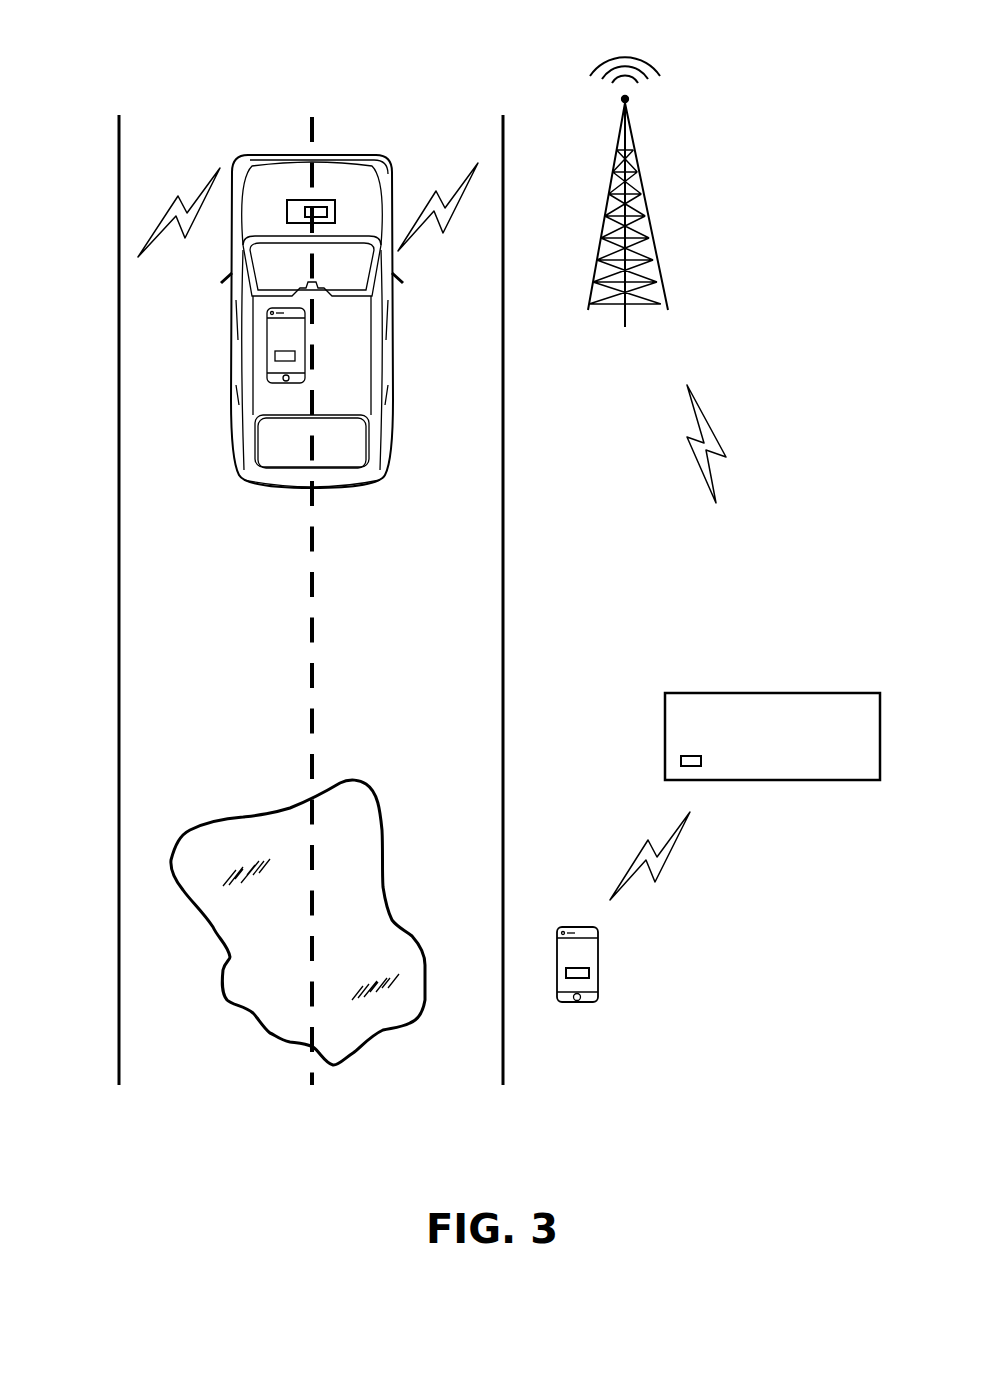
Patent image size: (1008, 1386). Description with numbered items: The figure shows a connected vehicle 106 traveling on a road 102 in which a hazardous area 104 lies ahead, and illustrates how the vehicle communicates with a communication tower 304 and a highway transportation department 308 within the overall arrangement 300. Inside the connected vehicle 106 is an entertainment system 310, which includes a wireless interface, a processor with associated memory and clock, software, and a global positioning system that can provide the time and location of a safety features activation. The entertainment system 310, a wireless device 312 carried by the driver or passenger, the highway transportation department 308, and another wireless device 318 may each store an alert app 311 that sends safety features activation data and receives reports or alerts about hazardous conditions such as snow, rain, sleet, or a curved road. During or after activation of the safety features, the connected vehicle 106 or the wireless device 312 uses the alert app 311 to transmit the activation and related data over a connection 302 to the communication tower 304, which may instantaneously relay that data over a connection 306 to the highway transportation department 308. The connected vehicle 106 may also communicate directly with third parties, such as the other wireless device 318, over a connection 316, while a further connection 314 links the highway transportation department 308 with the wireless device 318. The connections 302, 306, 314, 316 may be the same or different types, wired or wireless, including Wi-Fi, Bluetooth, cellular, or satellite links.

The road 102 is at (448, 1027).
The pothole / road hazard 104 is at (290, 909).
The connected vehicle 106 is at (237, 433).
The system 300 is at (715, 1023).
The connection 302 is at (452, 195).
The communication tower 304 is at (642, 187).
The connection 306 is at (715, 432).
The highway transportation department 308 is at (775, 781).
The entertainment system 310 is at (295, 207).
The alert app 311 is at (318, 210).
The wireless device 312 is at (280, 340).
The connection 314 is at (636, 858).
The connection 316 is at (192, 202).
The wireless device 318 is at (565, 1003).